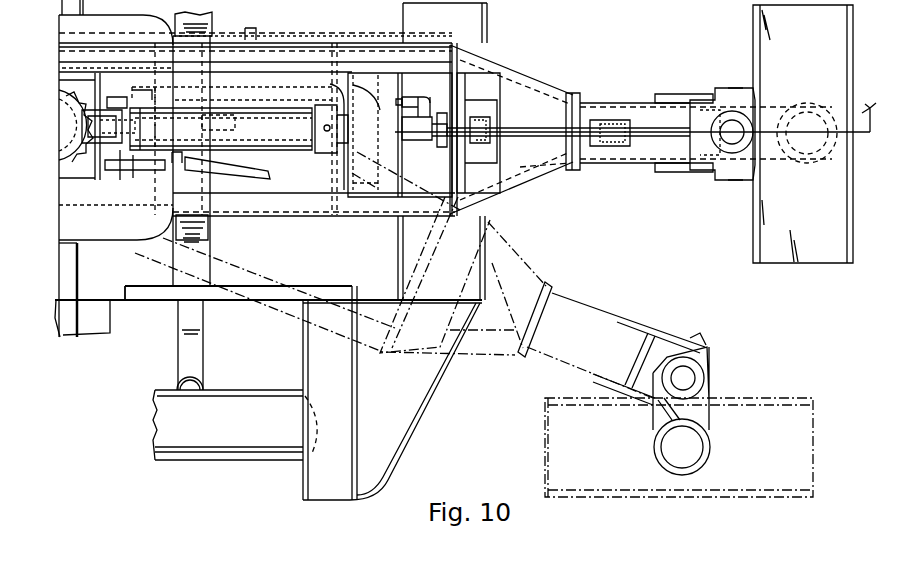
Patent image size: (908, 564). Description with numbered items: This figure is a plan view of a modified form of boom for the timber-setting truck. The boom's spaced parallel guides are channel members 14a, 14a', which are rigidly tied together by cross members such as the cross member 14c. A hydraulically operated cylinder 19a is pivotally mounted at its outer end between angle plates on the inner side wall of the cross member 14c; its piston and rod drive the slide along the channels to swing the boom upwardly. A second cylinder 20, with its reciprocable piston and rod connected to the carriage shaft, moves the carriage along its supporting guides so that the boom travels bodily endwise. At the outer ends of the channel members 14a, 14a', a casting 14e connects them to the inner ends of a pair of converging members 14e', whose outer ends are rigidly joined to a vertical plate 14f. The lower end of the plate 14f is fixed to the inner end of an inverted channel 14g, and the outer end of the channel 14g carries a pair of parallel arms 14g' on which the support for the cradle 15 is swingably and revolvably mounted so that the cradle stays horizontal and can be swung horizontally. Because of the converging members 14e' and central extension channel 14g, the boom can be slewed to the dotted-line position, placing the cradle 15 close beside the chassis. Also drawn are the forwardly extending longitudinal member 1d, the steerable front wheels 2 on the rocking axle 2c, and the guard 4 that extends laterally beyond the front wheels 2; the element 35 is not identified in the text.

The block 35 is at (225, 37).
The channel member 14a' is at (255, 32).
The channel member 14a is at (257, 213).
The cylinder 19a is at (291, 139).
The cross member 14c is at (353, 167).
The cylinder 20 is at (417, 137).
The casting 14e is at (496, 118).
The converging members 14e' is at (515, 133).
The vertical plate 14f is at (576, 170).
The inverted channel 14g is at (706, 150).
The parallel arms 14g' is at (705, 135).
The cradle 15 is at (742, 260).
The longitudinal member 1d is at (102, 291).
The axle 2c is at (194, 356).
The front wheels 2 is at (225, 438).
The guard 4 is at (437, 423).